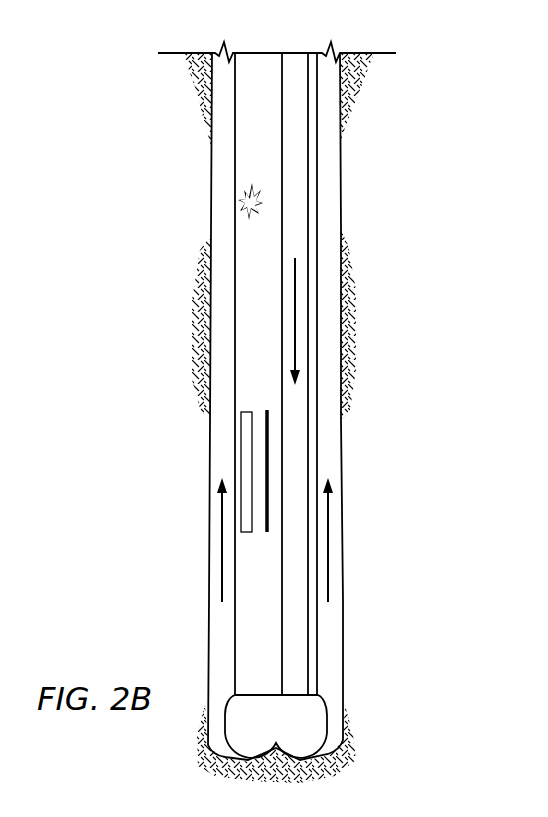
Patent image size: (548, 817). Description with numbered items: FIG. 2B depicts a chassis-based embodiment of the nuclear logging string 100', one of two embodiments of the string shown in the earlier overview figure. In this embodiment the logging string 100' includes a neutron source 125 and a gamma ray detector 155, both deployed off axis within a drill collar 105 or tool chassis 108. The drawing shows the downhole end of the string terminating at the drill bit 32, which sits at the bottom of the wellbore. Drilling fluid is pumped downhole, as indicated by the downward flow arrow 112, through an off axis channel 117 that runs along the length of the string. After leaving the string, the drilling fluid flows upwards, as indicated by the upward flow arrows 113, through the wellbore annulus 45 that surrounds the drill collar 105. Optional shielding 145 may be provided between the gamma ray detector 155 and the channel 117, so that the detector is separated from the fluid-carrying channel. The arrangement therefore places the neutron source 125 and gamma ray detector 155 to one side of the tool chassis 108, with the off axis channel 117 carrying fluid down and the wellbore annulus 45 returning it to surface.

The logging string 100' is at (245, 97).
The wellbore annulus 45 is at (332, 190).
The drill collar 105 is at (232, 630).
The tool chassis 108 is at (258, 308).
The off axis channel 117 is at (295, 127).
The neutron source 125 is at (246, 200).
The downhole pumping of drilling fluid 112 is at (292, 332).
The upward flow of drilling fluid 113 is at (328, 540).
The gamma ray detector 155 is at (246, 462).
The shielding 145 is at (268, 470).
The drill bit 32 is at (289, 733).